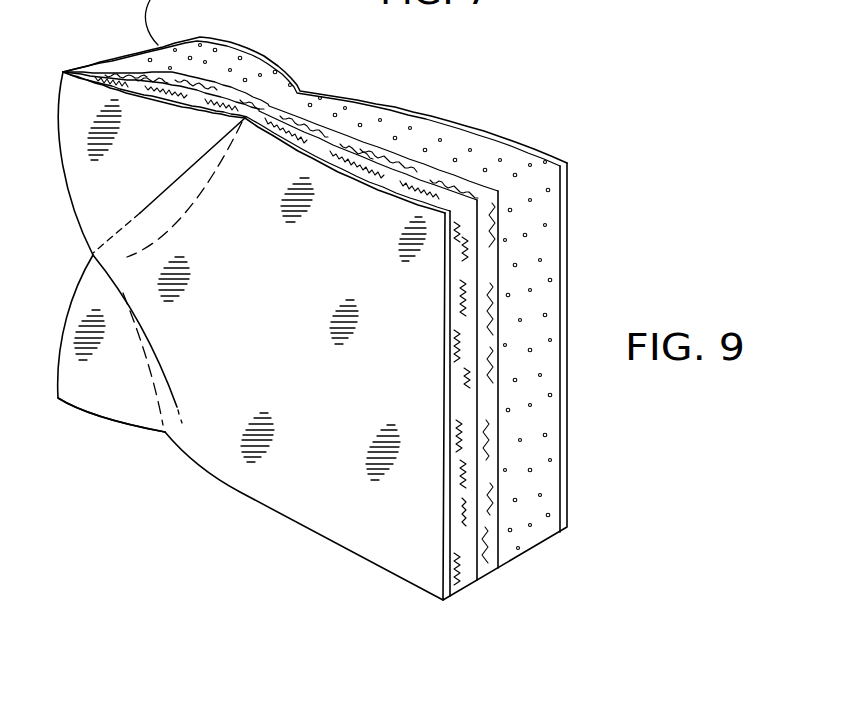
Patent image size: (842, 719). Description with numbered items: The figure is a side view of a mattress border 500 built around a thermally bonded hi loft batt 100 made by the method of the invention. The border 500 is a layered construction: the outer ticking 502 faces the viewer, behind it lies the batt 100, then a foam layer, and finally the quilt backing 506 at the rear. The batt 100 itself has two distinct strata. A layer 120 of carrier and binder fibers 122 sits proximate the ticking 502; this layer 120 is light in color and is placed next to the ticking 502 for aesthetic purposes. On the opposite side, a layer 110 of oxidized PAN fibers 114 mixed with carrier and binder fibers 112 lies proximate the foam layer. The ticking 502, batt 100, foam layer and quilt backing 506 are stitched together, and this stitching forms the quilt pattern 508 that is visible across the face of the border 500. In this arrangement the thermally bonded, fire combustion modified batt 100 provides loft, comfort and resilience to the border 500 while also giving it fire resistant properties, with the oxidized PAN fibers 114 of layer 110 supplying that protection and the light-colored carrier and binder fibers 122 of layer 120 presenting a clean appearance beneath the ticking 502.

The mattress border 500 is at (543, 108).
The ticking 502 is at (62, 71).
The thermally bonded hi loft batt 100 is at (99, 57).
The quilt backing 506 is at (201, 37).
The quilt pattern 508 is at (163, 436).
The layer of oxidized PAN fibers and carrier and binder fibers 110 is at (495, 573).
The carrier and binder fibers 112 is at (493, 542).
The oxidized PAN fibers 114 is at (480, 562).
The layer of carrier and binder fibers 120 is at (454, 600).
The carrier and binder fibers 122 is at (463, 572).